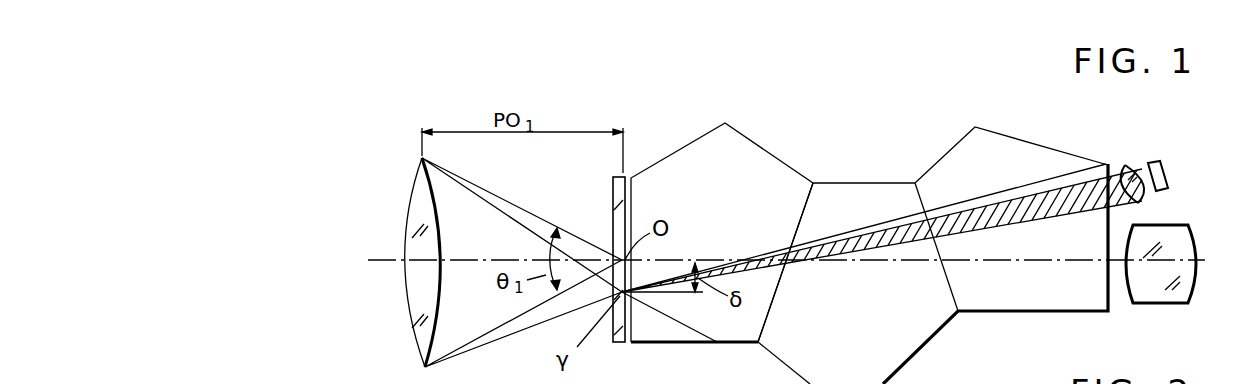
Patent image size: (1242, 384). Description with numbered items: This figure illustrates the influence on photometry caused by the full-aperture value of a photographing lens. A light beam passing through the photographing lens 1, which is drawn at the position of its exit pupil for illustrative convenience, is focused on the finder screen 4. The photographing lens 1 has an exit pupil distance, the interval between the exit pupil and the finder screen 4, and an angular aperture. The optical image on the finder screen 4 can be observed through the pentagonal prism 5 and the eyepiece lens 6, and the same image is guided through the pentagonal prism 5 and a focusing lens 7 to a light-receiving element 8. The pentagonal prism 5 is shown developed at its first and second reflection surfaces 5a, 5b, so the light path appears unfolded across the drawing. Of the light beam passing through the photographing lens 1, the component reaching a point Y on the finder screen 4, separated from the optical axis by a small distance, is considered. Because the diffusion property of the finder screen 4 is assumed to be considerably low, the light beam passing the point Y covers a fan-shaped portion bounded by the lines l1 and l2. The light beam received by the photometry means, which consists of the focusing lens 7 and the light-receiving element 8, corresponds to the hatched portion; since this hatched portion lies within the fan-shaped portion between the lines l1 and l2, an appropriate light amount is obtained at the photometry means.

The photographing lens 1 is at (410, 195).
The finder screen 4 is at (617, 345).
The pentagonal prism 5 is at (869, 253).
The first reflection surface 5a is at (777, 300).
The second reflection surface 5b is at (957, 283).
The eyepiece lens 6 is at (1190, 238).
The focusing lens 7 is at (1128, 163).
The light-receiving element 8 is at (1162, 164).
The line l1 is at (1032, 180).
The line l2 is at (684, 328).